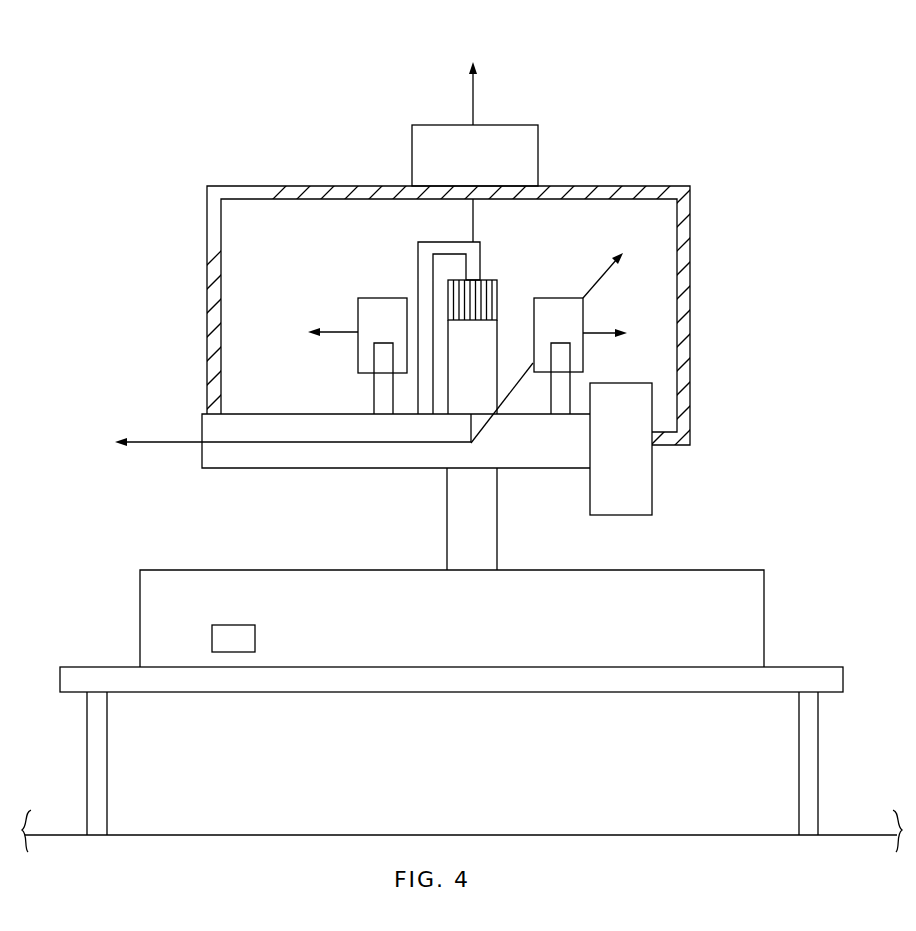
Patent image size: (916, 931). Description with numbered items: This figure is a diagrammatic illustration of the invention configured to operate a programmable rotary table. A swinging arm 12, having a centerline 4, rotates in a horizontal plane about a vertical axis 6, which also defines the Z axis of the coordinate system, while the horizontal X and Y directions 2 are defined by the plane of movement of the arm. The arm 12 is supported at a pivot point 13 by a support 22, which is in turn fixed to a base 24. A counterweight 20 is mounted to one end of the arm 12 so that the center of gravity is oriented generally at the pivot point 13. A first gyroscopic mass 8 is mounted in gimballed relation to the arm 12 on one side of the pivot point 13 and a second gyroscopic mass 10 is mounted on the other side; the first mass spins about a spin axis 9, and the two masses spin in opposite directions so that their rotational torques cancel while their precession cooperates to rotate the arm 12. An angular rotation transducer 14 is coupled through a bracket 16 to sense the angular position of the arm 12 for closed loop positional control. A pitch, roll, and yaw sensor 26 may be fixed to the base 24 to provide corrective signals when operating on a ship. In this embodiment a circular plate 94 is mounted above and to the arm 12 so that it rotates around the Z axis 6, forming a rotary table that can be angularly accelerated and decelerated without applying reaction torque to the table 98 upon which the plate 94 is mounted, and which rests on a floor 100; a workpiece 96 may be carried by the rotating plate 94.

The X-axis direction 2 is at (603, 275).
The centerline 4 is at (187, 440).
The axis 6 is at (476, 98).
The first gyroscopic mass 8 is at (385, 297).
The spin axis 9 is at (340, 330).
The second gyroscopic mass 10 is at (547, 297).
The swinging arm 12 is at (317, 470).
The pivot point 13 is at (497, 470).
The angular rotation transducer 14 is at (487, 280).
The bracket 16 is at (418, 252).
The counterweight 20 is at (652, 488).
The support 22 is at (447, 505).
The base 24 is at (510, 628).
The pitch, roll, and yaw sensor 26 is at (255, 640).
The circular plate 94 is at (298, 172).
The workpiece 96 is at (417, 124).
The table 98 is at (102, 667).
The floor 100 is at (362, 833).